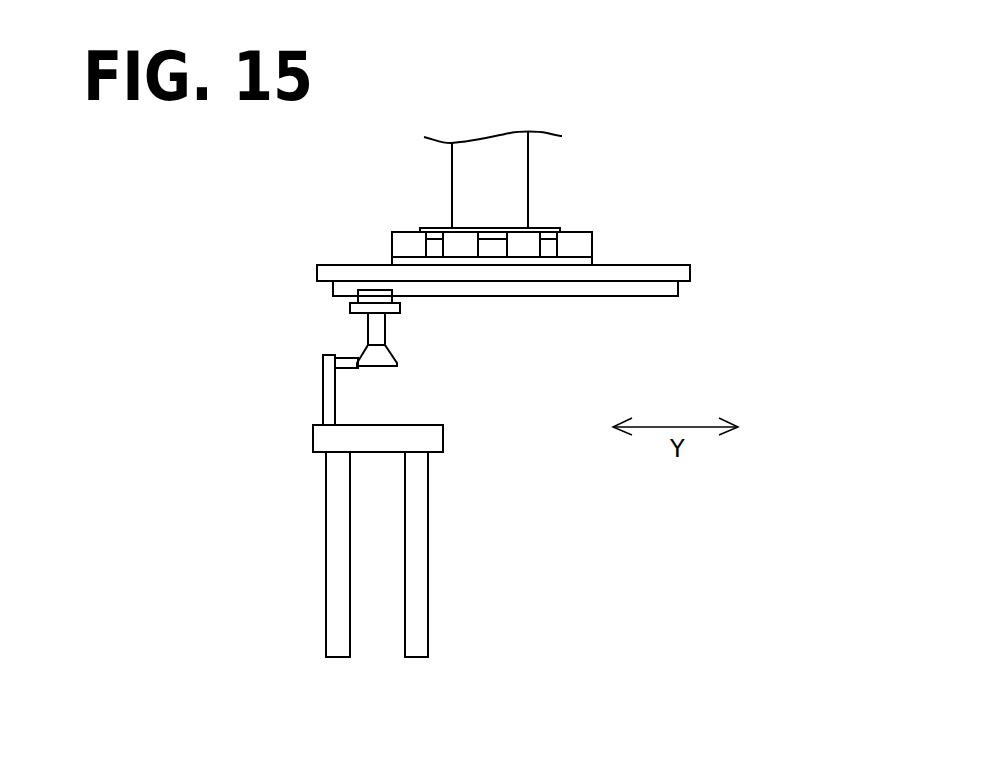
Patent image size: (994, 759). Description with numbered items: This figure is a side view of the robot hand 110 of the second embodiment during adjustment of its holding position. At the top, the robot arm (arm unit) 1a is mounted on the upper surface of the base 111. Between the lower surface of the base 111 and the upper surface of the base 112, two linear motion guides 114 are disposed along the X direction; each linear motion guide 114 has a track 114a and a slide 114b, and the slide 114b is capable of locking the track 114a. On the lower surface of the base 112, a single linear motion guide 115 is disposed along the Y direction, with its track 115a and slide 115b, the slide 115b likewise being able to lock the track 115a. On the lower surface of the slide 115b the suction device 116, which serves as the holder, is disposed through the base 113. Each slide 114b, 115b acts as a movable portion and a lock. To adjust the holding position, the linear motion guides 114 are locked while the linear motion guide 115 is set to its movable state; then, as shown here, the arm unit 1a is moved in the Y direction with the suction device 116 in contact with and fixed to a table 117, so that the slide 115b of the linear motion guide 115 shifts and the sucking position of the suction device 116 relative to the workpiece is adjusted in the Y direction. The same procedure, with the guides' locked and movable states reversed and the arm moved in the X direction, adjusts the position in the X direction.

The robot hand 110 is at (677, 170).
The robot arm (arm unit) 1a is at (513, 182).
The base 111 is at (548, 227).
The linear motion guide 114 is at (443, 184).
The track 114a is at (435, 243).
The slide 114b is at (400, 228).
The base 112 is at (333, 263).
The linear motion guide 115 is at (412, 280).
The track 115a is at (338, 292).
The slide 115b is at (358, 299).
The base 113 is at (350, 308).
The suction device 116 is at (382, 358).
The table 117 is at (330, 383).